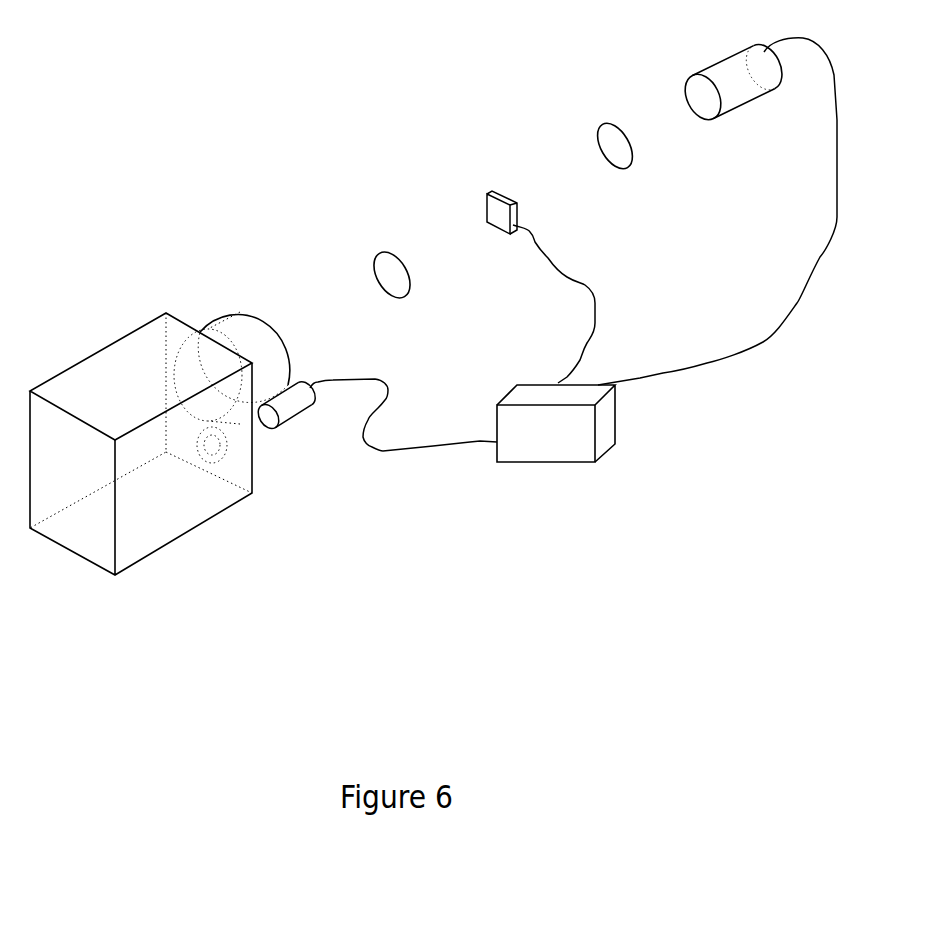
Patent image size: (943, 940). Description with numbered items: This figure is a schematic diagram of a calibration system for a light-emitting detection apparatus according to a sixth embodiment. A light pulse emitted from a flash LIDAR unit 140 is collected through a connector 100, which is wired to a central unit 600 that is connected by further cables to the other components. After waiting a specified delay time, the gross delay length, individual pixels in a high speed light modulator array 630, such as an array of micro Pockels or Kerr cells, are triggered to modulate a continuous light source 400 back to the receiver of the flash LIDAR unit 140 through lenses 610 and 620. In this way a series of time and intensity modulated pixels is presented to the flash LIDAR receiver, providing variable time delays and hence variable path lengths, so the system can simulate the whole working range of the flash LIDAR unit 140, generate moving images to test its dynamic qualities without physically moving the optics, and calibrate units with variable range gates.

The connector 100 is at (287, 403).
The flash LIDAR unit 140 is at (150, 513).
The continuous light source 400 is at (718, 86).
The control unit 600 is at (528, 448).
The lens 610 is at (613, 138).
The lens 620 is at (385, 267).
The high speed light modulator array 630 is at (499, 190).